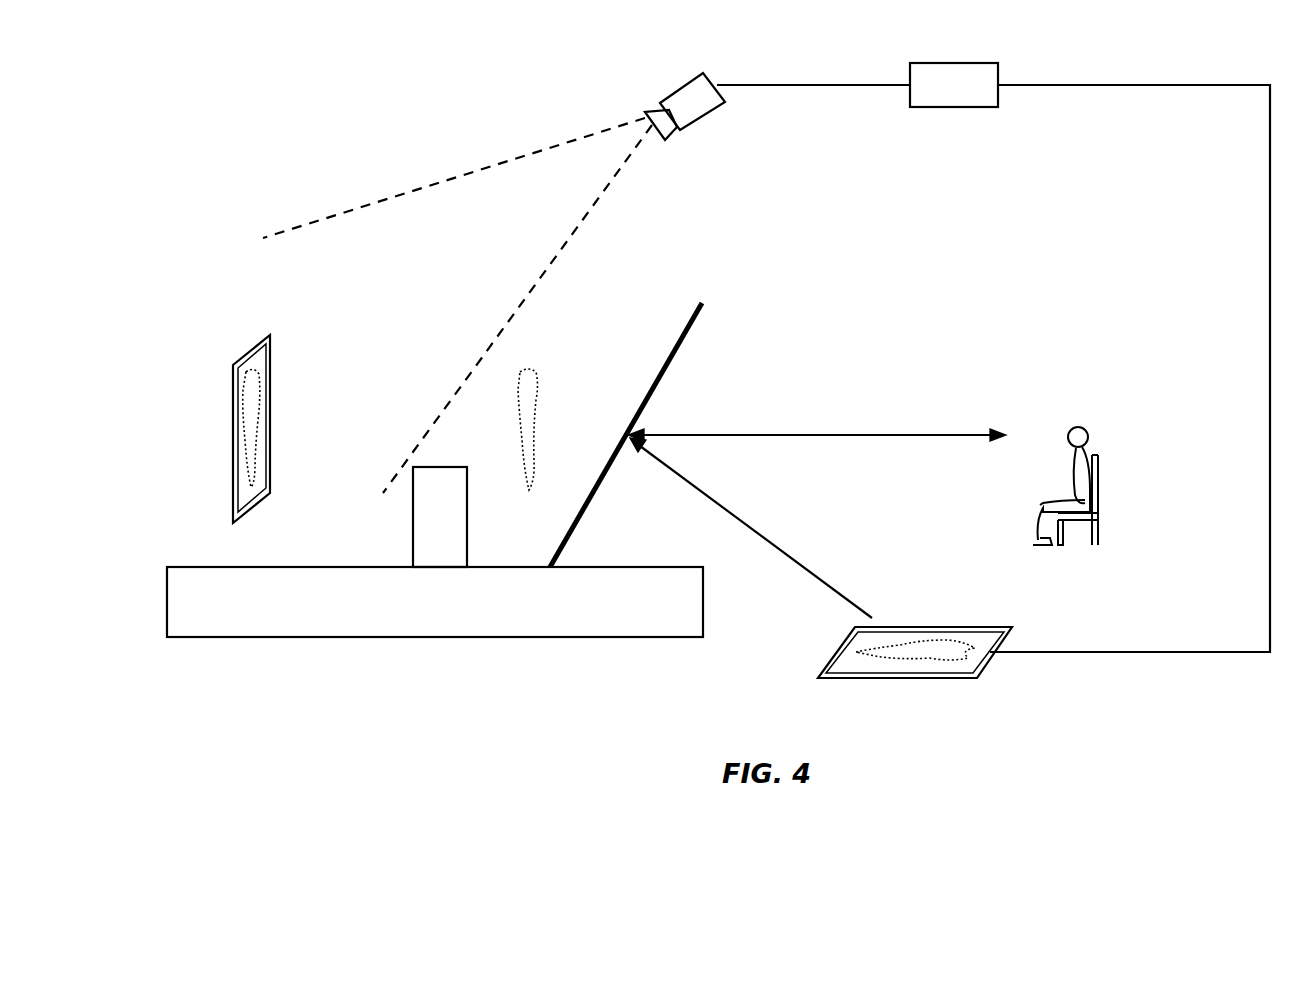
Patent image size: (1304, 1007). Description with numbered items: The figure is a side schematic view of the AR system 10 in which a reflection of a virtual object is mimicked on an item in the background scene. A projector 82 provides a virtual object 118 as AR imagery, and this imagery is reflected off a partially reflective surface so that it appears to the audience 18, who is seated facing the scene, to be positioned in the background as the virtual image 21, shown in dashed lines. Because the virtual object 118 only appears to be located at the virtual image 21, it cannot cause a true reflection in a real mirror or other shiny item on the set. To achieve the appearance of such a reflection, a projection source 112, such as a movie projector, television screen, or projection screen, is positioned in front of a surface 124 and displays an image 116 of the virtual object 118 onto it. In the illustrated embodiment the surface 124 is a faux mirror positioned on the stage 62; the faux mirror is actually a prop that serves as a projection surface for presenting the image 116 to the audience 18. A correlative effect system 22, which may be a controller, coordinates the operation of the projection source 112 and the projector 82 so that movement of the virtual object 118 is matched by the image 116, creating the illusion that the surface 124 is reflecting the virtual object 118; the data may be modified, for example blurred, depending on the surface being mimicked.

The AR system 10 is at (245, 198).
The projection source 112 is at (683, 87).
The correlative effect system 22 is at (966, 96).
The stage 62 is at (703, 606).
The virtual image 21 is at (527, 372).
The surface 124 is at (255, 429).
The image 116 is at (258, 408).
The projector 82 is at (915, 658).
The virtual object 118 is at (923, 643).
The audience 18 is at (1088, 425).